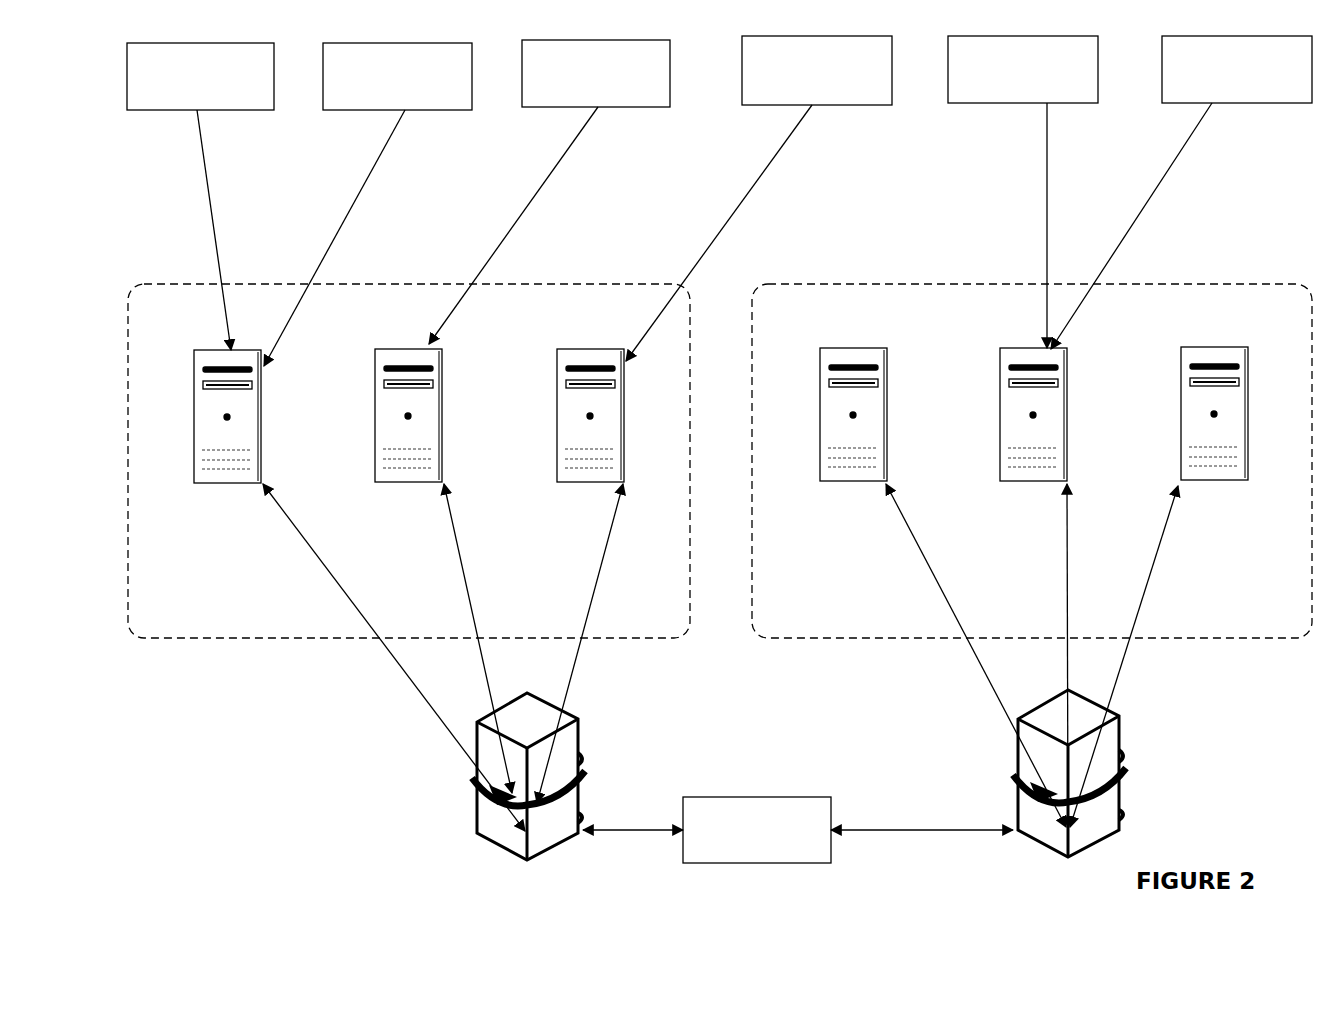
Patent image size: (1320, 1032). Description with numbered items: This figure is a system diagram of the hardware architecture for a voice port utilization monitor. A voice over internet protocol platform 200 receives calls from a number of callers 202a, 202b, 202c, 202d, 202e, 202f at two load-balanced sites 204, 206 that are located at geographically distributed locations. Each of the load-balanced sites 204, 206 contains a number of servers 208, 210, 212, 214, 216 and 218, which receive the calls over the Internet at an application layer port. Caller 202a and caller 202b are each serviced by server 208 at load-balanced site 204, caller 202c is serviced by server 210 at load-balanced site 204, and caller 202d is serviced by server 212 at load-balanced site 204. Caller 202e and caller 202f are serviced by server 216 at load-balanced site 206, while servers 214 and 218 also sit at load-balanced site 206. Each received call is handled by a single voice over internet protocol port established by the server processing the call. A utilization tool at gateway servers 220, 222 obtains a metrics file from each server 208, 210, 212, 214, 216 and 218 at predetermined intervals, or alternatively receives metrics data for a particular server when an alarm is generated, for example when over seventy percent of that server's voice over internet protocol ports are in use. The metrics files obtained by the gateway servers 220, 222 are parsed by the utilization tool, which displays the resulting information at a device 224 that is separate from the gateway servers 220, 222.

The voice over internet protocol platform 200 is at (276, 845).
The caller 202a is at (200, 196).
The caller 202b is at (368, 204).
The caller 202c is at (549, 192).
The caller 202d is at (759, 198).
The caller 202e is at (1023, 192).
The caller 202f is at (1181, 192).
The load-balanced site 204 is at (292, 668).
The load-balanced site 206 is at (918, 668).
The server 208 is at (252, 524).
The server 210 is at (391, 524).
The server 212 is at (572, 524).
The server 214 is at (842, 524).
The server 216 is at (1016, 524).
The server 218 is at (1197, 524).
The gateway server 220 is at (452, 813).
The gateway server 222 is at (1166, 784).
The device 224 is at (798, 830).